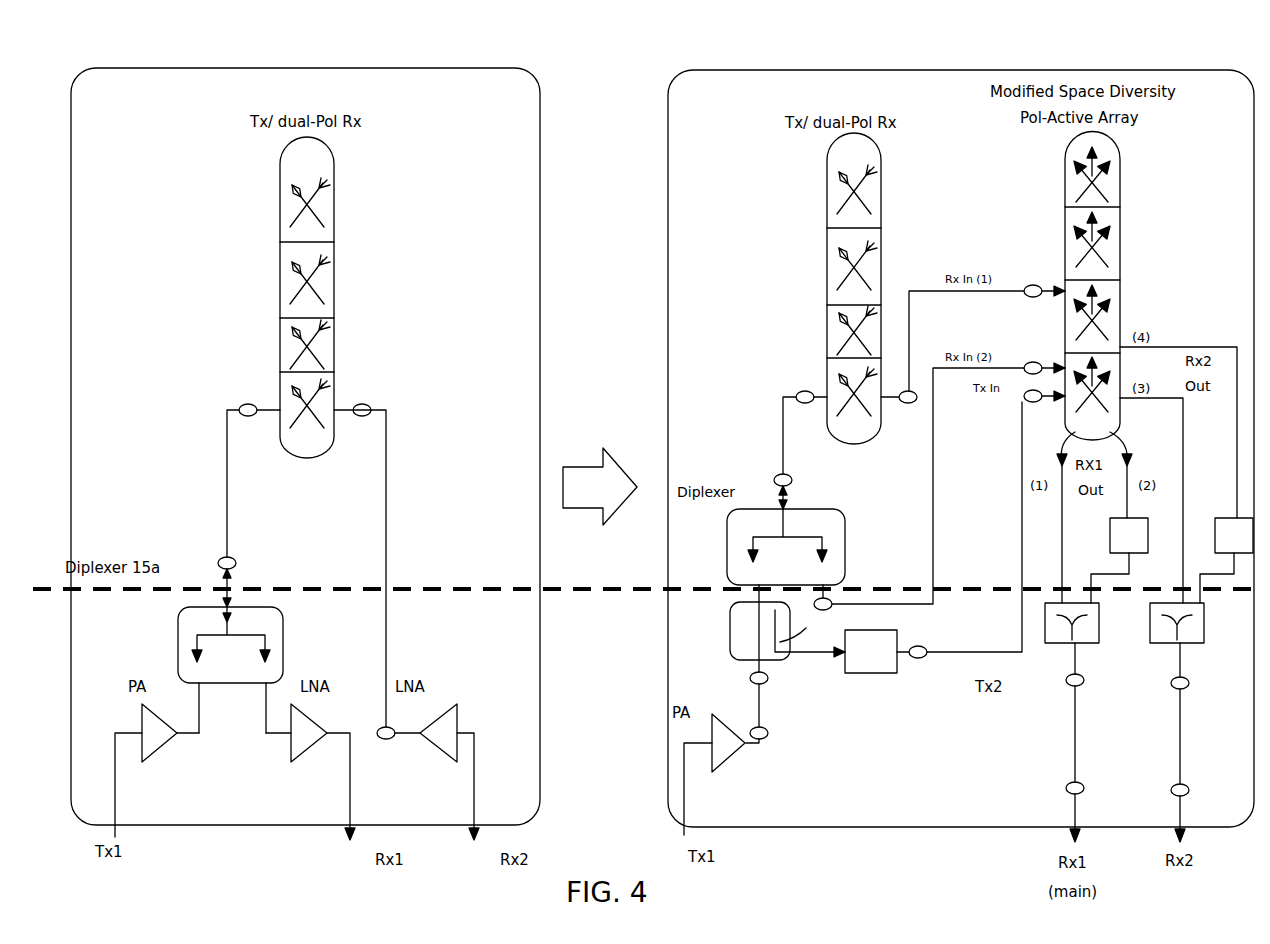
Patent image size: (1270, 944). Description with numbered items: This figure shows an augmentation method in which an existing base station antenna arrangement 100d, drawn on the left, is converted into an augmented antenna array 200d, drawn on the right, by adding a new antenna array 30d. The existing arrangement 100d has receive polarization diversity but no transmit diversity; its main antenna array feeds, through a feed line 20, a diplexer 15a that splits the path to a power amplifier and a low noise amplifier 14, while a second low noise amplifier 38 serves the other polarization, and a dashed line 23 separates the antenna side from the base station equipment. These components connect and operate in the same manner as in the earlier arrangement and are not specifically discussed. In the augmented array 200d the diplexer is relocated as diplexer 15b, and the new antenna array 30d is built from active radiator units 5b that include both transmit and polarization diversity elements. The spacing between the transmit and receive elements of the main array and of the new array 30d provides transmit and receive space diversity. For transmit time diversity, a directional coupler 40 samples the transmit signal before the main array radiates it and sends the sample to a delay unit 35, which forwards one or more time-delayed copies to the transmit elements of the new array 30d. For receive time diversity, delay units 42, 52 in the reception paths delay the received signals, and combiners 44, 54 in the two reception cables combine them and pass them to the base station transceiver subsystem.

The existing base station antenna arrangement 100d is at (330, 68).
The augmented antenna array 200d is at (870, 70).
The feed line 20 is at (227, 510).
The interface boundary line 23 is at (70, 590).
The diplexer 15a is at (281, 635).
The relocated diplexer 15b is at (727, 532).
The low noise amplifier LNA 14 is at (292, 745).
The low noise amplifier LNA 38 is at (437, 754).
The new antenna array 30d is at (1123, 286).
The active radiator unit 5b is at (1122, 240).
The directional coupler 40 is at (727, 630).
The delay unit 35 is at (876, 678).
The delay unit 42 is at (1135, 512).
The delay unit 52 is at (1226, 518).
The combiner 44 is at (1100, 640).
The combiner 54 is at (1205, 640).